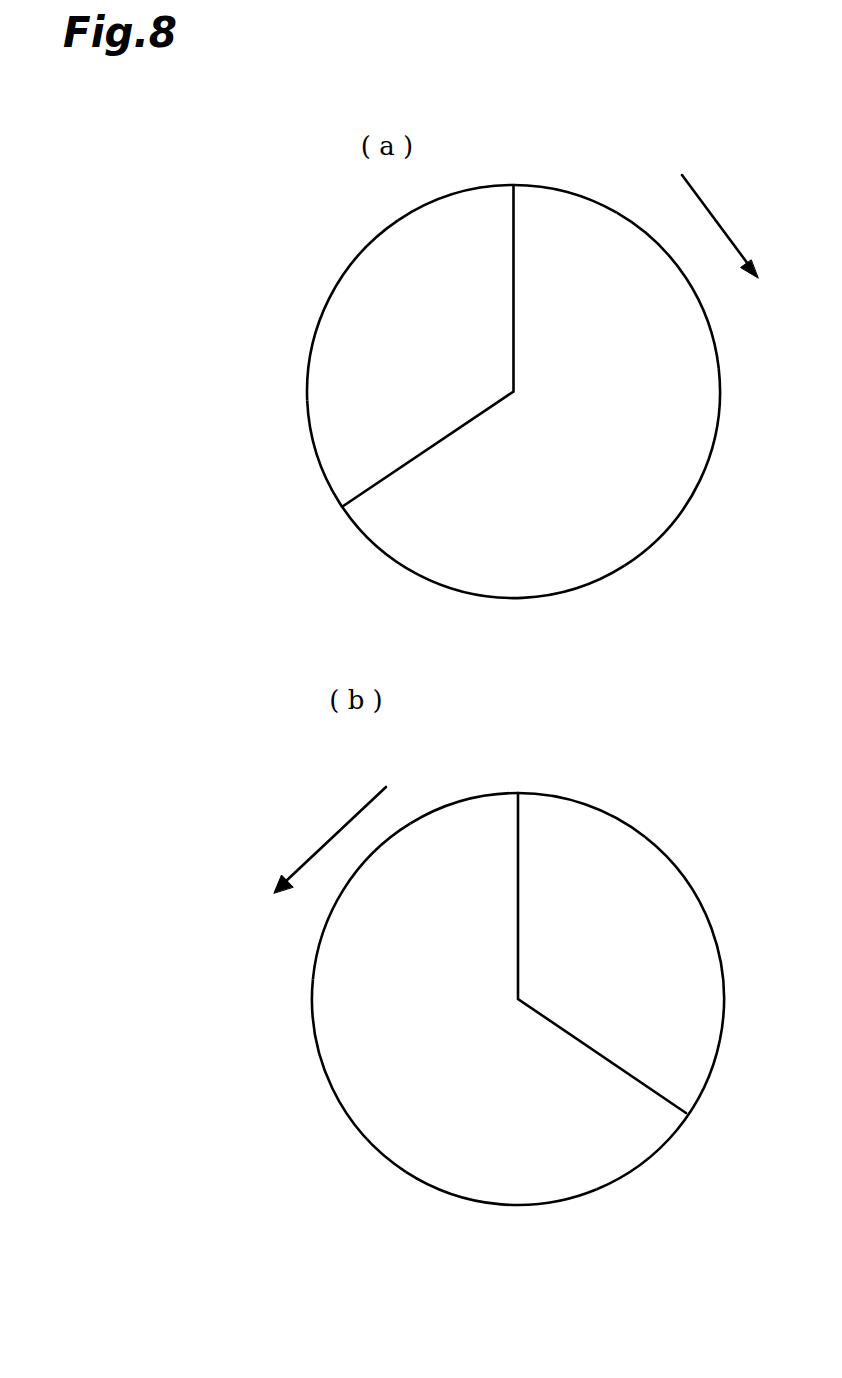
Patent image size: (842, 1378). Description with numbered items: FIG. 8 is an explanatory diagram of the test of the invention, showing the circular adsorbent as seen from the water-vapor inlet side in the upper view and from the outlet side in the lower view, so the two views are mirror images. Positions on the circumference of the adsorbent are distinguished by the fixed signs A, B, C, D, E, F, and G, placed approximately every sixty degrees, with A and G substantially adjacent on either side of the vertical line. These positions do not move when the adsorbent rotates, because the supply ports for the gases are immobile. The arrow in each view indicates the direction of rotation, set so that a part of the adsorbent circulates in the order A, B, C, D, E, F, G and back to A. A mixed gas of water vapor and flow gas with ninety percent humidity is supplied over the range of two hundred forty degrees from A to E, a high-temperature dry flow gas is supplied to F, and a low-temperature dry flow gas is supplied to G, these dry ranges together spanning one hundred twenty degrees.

The position A is at (513, 509).
The position B is at (516, 596).
The position C is at (516, 770).
The position D is at (515, 878).
The position E is at (513, 795).
The position F is at (515, 630).
The position G is at (521, 511).